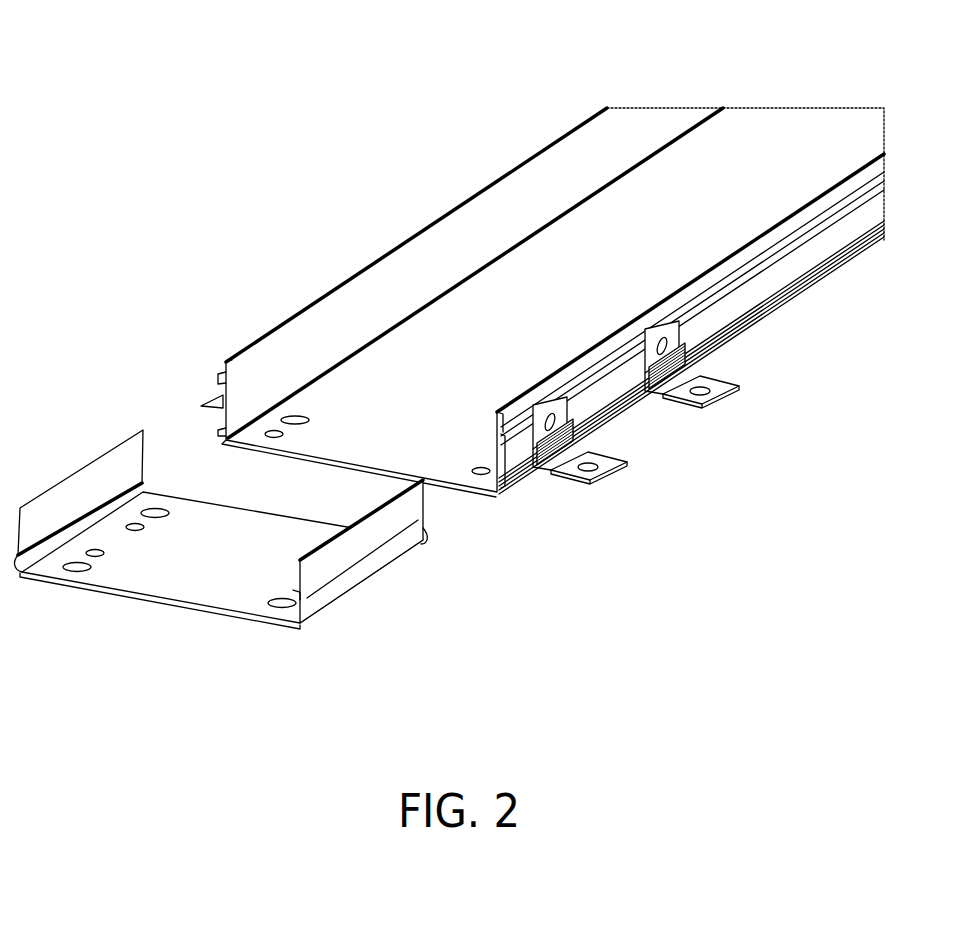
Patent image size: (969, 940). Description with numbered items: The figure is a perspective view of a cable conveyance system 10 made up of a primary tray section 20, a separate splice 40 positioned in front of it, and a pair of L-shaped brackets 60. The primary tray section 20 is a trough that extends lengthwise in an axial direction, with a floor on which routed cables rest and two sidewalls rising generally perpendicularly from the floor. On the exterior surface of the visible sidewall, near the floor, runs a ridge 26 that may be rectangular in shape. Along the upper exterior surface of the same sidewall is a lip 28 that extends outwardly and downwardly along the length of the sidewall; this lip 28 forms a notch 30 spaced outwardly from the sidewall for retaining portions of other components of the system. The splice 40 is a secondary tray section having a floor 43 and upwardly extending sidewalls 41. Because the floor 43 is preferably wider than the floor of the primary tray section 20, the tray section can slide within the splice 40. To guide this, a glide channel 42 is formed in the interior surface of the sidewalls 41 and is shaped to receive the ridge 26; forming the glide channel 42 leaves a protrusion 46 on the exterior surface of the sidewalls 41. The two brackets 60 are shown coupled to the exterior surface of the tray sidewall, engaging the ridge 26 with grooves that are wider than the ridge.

The cable conveyance system 10 is at (219, 122).
The primary tray section 20 is at (400, 243).
The ridge 26 is at (722, 343).
The lip 28 is at (743, 273).
The notch 30 is at (502, 437).
The splice 40 is at (248, 536).
The sidewalls 41 is at (55, 512).
The glide channel 42 is at (123, 487).
The floor 43 is at (224, 570).
The protrusion 46 is at (347, 588).
The L-shaped brackets 60 is at (627, 464).